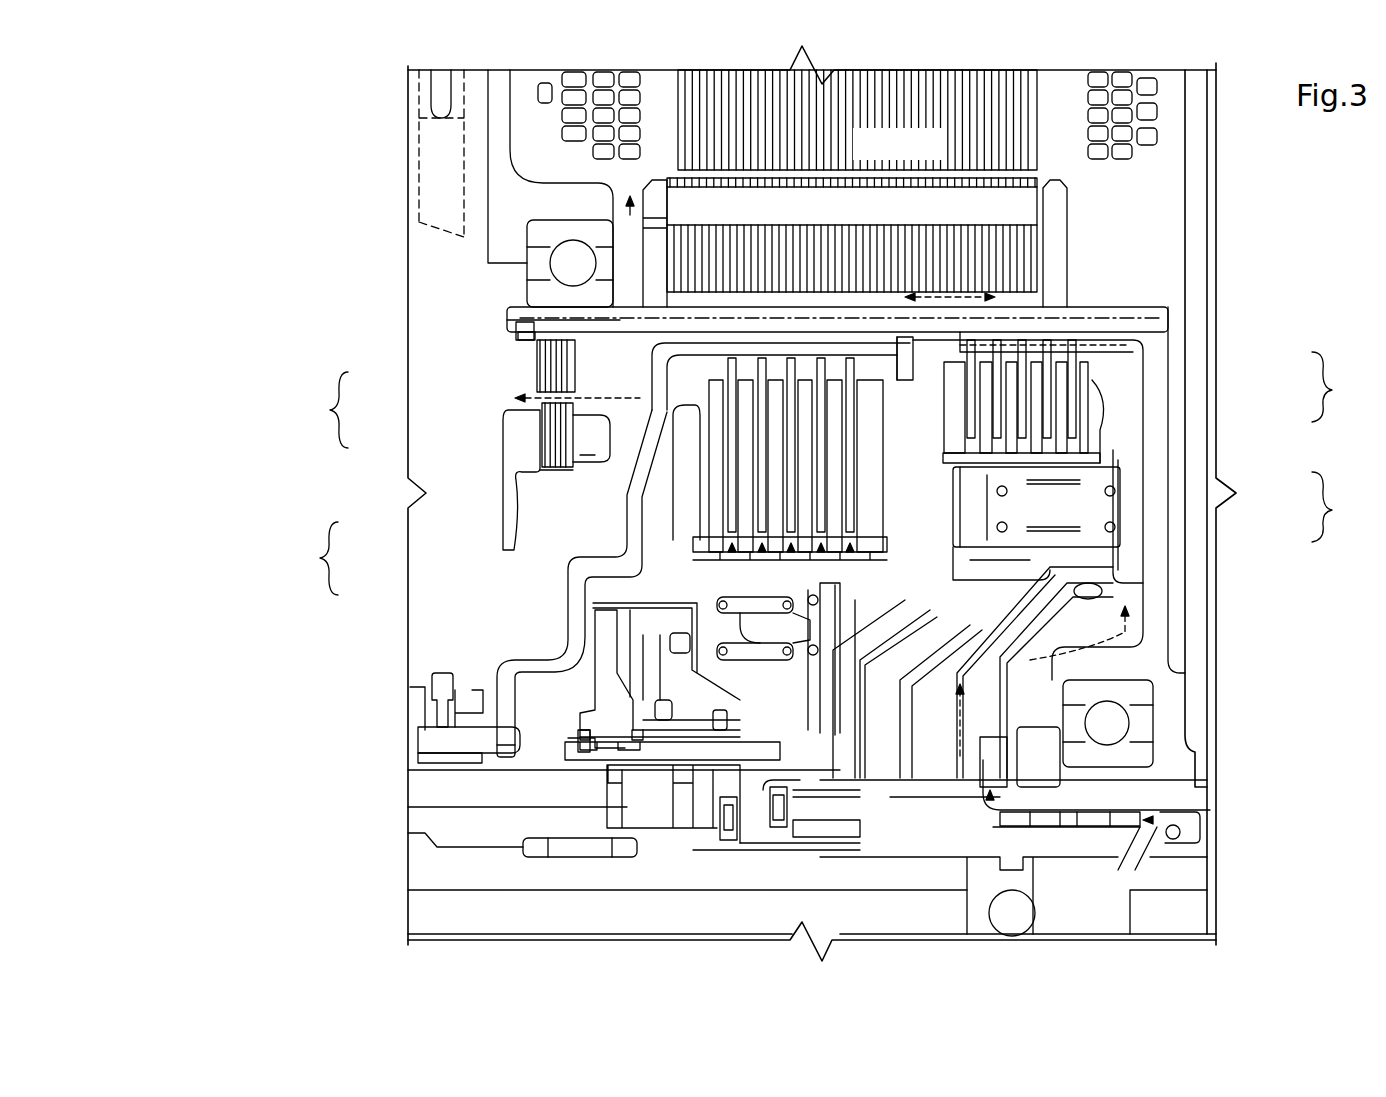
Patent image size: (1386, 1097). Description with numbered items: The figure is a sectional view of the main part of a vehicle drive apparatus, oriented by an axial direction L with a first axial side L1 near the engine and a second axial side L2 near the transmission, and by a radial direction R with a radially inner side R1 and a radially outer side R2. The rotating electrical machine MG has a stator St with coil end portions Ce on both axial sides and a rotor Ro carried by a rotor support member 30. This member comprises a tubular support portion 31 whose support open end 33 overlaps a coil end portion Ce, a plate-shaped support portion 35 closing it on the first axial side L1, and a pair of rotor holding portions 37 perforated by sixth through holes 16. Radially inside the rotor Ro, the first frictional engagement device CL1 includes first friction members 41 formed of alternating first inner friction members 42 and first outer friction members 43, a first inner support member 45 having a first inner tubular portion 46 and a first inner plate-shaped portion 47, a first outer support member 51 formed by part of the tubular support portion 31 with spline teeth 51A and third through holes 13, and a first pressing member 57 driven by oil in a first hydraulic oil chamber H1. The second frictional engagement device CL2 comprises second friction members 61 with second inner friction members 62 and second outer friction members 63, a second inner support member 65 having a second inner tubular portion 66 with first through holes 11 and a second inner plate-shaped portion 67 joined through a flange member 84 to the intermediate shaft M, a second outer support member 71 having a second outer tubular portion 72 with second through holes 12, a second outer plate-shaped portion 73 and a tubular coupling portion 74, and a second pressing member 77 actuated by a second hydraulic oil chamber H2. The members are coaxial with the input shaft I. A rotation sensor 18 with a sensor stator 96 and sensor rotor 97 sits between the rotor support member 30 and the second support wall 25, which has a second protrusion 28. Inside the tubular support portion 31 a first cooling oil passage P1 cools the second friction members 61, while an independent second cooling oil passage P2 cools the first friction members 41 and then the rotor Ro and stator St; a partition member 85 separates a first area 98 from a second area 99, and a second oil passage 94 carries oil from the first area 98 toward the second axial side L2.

The first through holes 11 is at (770, 562).
The second through holes 12 is at (740, 345).
The third through holes 13 is at (930, 340).
The sixth through holes 16 is at (647, 228).
The rotation sensor 18 is at (486, 447).
The second support wall 25 is at (497, 200).
The second protrusion 28 is at (560, 187).
The rotor support member 30 is at (1161, 294).
The tubular support portion 31 is at (708, 345).
The support open end 33 is at (520, 308).
The plate-shaped support portion 35 is at (1172, 665).
The rotor holding portions 37 is at (645, 185).
The first friction members 41 is at (1337, 387).
The first inner friction members 42 is at (1080, 425).
The first outer friction members 43 is at (1067, 395).
The first inner support member 45 is at (1337, 507).
The first inner tubular portion 46 is at (1020, 485).
The first inner plate-shaped portion 47 is at (1015, 512).
The first outer support member 51 is at (1085, 305).
The spline teeth 51A is at (1130, 340).
The first pressing member 57 is at (1135, 548).
The second friction members 61 is at (324, 410).
The second inner friction members 62 is at (587, 424).
The second outer friction members 63 is at (580, 388).
The second inner support member 65 is at (314, 558).
The second inner tubular portion 66 is at (590, 540).
The second inner plate-shaped portion 67 is at (625, 632).
The second outer support member 71 is at (712, 440).
The second outer tubular portion 72 is at (644, 336).
The second outer plate-shaped portion 73 is at (565, 590).
The tubular coupling portion 74 is at (882, 350).
The second pressing member 77 is at (660, 517).
The flange member 84 is at (818, 840).
The partition member 85 is at (897, 340).
The second oil passage 94 is at (858, 350).
The sensor stator 96 is at (516, 330).
The sensor rotor 97 is at (545, 452).
The first area 98 is at (772, 355).
The second area 99 is at (948, 345).
The coil end portions Ce is at (577, 72).
The stator St is at (925, 72).
The rotor Ro is at (1028, 193).
The rotating electrical machine MG is at (1168, 199).
The first frictional engagement device CL1 is at (1139, 603).
The second frictional engagement device CL2 is at (475, 642).
The first cooling oil passage P1 is at (778, 658).
The second cooling oil passage P2 is at (1007, 682).
The first hydraulic oil chamber H1 is at (1090, 727).
The second hydraulic oil chamber H2 is at (539, 702).
The intermediate shaft M is at (420, 855).
The input shaft I is at (1190, 860).
The axial direction L is at (216, 112).
The first axial side L1 is at (230, 112).
The second axial side L2 is at (108, 112).
The radial direction R is at (130, 200).
The radially inner side R1 is at (133, 312).
The radially outer side R2 is at (132, 187).